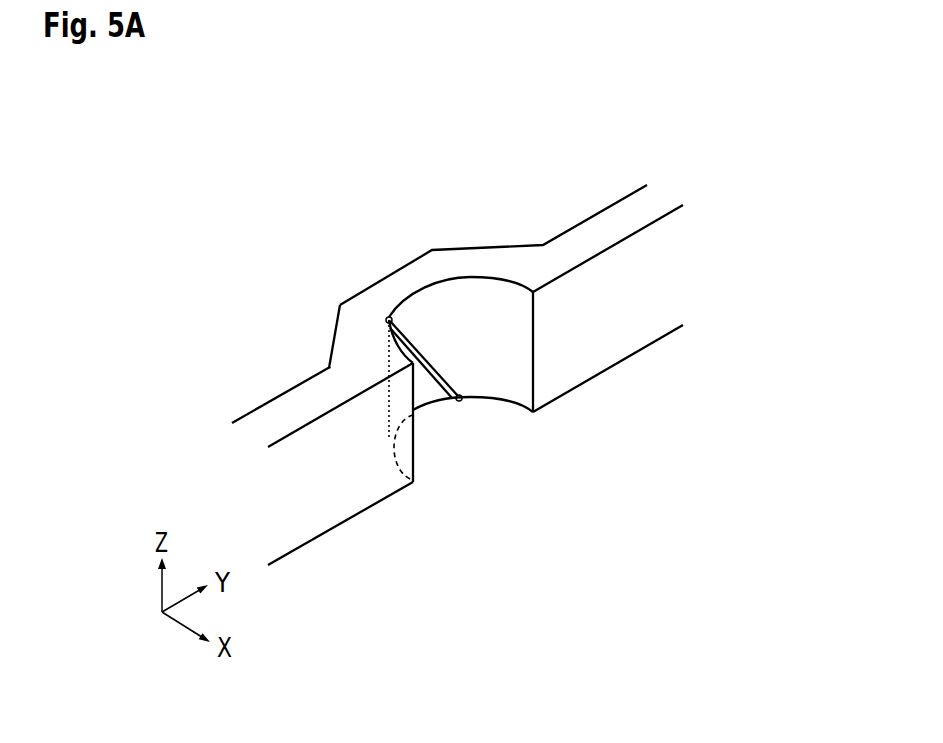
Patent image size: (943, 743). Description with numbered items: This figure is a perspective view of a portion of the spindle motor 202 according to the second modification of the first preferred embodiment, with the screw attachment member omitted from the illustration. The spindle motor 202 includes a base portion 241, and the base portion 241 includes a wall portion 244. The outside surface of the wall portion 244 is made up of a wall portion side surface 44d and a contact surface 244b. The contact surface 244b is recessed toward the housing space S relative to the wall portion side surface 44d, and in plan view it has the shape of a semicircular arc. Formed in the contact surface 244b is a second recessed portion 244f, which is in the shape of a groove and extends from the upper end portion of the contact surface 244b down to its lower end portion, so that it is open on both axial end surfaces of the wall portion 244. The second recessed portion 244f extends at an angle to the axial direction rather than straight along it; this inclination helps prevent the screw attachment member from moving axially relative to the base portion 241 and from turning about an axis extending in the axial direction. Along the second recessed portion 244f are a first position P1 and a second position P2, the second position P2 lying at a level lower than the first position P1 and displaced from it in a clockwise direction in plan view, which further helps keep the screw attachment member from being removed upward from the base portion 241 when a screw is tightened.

The spindle motor 202 is at (718, 148).
The housing space S is at (216, 172).
The base portion 241 is at (604, 383).
The wall portion 244 is at (310, 400).
The second recessed portion 244f is at (413, 352).
The contact surface 244b is at (488, 310).
The wall portion side surface 44d is at (332, 510).
The first position P1 is at (389, 317).
The second position P2 is at (459, 401).